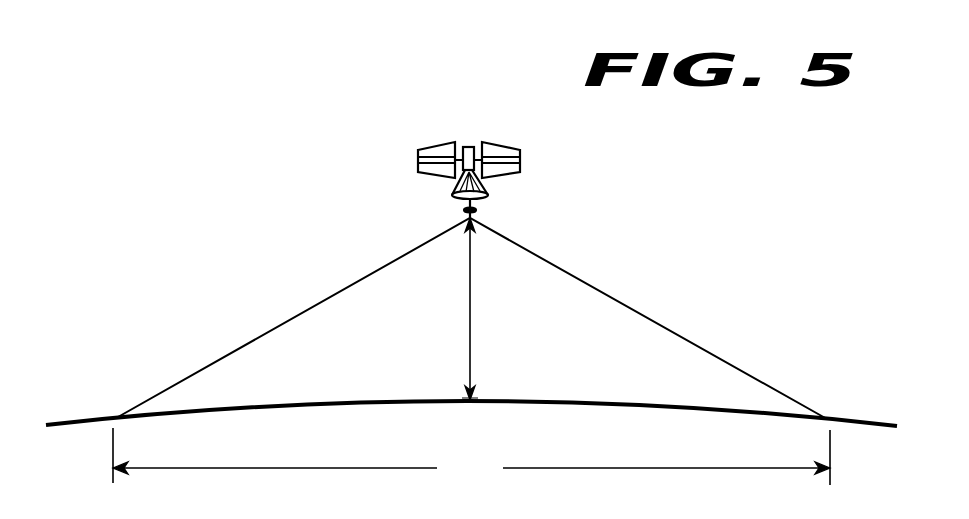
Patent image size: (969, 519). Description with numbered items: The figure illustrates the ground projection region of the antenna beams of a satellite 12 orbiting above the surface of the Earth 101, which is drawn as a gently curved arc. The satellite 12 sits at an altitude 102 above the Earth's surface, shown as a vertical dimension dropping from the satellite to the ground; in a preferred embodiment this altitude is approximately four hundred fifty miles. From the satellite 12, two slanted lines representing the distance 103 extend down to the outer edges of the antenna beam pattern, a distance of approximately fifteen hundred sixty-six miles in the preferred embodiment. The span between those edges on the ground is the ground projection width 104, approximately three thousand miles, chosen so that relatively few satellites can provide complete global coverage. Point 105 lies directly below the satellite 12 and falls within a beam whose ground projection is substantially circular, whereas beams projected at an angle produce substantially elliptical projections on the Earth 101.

The satellite 12 is at (415, 158).
The surface of the Earth 101 is at (863, 420).
The altitude 102 is at (470, 320).
The distance from the satellite to the outer edge of the antenna beam 103 is at (292, 318).
The ground projection width 104 is at (471, 456).
The point directly below the satellite 105 is at (462, 397).